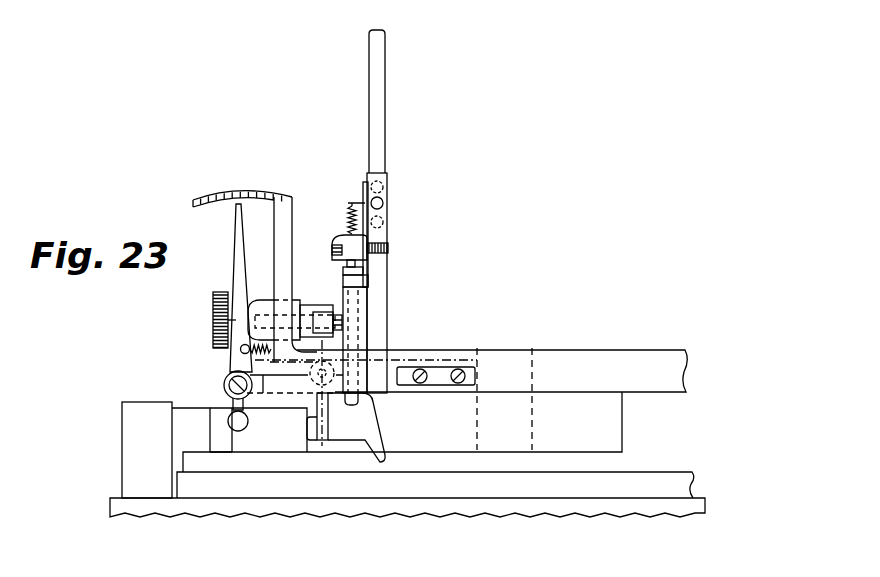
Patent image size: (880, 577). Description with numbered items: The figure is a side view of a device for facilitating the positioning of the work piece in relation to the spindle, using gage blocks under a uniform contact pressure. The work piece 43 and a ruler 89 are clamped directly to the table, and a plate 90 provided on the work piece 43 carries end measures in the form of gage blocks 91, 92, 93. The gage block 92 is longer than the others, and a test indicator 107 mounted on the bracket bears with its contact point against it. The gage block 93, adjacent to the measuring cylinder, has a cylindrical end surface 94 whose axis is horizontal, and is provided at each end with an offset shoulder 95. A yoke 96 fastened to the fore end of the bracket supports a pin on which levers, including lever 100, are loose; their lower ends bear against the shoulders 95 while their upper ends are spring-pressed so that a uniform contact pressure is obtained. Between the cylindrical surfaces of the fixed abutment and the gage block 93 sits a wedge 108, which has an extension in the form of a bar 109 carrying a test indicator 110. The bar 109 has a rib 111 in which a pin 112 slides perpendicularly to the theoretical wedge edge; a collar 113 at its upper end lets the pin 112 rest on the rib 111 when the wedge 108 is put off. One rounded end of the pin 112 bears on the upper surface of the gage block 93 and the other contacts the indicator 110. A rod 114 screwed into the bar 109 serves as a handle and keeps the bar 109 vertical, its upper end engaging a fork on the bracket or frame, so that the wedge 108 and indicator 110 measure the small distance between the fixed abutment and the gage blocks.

The work piece 43 is at (665, 481).
The ruler 89 is at (138, 414).
The plate 90 is at (338, 462).
The gage block 91 is at (182, 430).
The gage block 92 is at (218, 417).
The gage block 93 is at (263, 438).
The cylindrical end surface 94 is at (362, 440).
The offset shoulder 95 is at (313, 452).
The yoke 96 is at (265, 307).
The lever 100 is at (323, 428).
The test indicator 107 is at (238, 256).
The wedge 108 is at (382, 418).
The bar 109 is at (378, 330).
The test indicator 110 is at (342, 236).
The rib 111 is at (350, 303).
The pin 112 is at (350, 278).
The collar 113 is at (363, 268).
The rod 114 is at (378, 130).